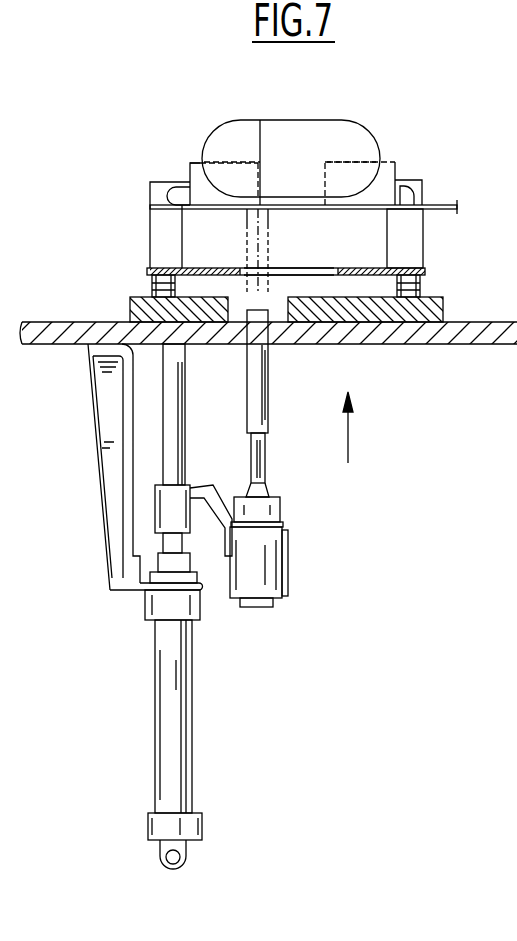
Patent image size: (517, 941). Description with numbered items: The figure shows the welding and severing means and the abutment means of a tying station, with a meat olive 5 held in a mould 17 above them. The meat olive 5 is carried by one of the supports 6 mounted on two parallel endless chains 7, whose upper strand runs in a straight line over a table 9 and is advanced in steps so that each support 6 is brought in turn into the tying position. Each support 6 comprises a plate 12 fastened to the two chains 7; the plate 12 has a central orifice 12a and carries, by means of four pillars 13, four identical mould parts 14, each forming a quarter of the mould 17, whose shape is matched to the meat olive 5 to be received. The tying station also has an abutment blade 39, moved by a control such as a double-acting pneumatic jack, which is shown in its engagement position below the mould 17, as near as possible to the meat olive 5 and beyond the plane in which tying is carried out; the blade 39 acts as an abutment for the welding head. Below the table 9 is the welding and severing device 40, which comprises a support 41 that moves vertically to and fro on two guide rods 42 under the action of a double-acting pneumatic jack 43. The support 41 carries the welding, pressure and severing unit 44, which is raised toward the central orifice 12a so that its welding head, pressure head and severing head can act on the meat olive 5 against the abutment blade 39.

The meat olive 5 is at (311, 135).
The mould 17 is at (199, 155).
The mould parts 14 is at (202, 188).
The abutment blade 39 is at (441, 207).
The pillars 13 is at (162, 220).
The plate 12 is at (168, 268).
The central orifice 12a is at (300, 268).
The endless chains 7 is at (152, 286).
The supports 6 is at (428, 244).
The table 9 is at (425, 301).
The welding, pressure and severing unit 44 is at (274, 372).
The guide rods 42 is at (176, 420).
The support 41 is at (260, 458).
The welding and severing device 40 is at (290, 556).
The double-acting pneumatic jack 43 is at (175, 718).